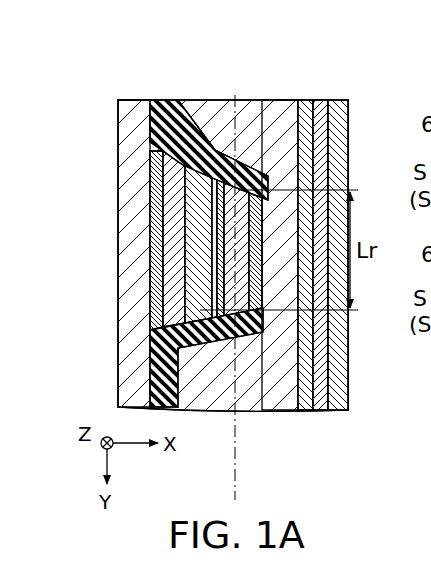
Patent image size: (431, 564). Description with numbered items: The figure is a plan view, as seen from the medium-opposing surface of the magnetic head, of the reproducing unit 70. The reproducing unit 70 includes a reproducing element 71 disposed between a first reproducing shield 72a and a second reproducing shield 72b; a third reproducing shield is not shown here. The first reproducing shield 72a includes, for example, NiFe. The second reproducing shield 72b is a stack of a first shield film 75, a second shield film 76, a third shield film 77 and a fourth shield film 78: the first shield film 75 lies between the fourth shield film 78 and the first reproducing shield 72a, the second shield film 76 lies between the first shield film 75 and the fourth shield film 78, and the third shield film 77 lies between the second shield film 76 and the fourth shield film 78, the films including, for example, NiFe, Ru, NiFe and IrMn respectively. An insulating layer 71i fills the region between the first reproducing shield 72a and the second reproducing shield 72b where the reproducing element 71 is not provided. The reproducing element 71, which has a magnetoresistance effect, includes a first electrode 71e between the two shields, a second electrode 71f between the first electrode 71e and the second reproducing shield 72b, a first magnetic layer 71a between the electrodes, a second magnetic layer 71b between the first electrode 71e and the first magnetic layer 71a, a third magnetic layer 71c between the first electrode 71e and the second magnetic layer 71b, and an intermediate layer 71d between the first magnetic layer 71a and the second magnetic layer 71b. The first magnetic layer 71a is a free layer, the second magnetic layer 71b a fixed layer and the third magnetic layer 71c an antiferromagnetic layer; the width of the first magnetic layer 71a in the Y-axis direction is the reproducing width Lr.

The reproducing unit 70 is at (228, 257).
The reproducing element 71 is at (202, 210).
The first magnetic layer 71a is at (249, 195).
The second magnetic layer 71b is at (197, 190).
The third magnetic layer 71c is at (172, 168).
The intermediate layer 71d is at (215, 200).
The first electrode 71e is at (163, 180).
The second electrode 71f is at (265, 196).
The insulating layer 71i is at (150, 348).
The first reproducing shield 72a is at (134, 380).
The second reproducing shield 72b is at (325, 300).
The first shield film 75 is at (263, 382).
The second shield film 76 is at (307, 382).
The third shield film 77 is at (323, 382).
The fourth shield film 78 is at (367, 281).